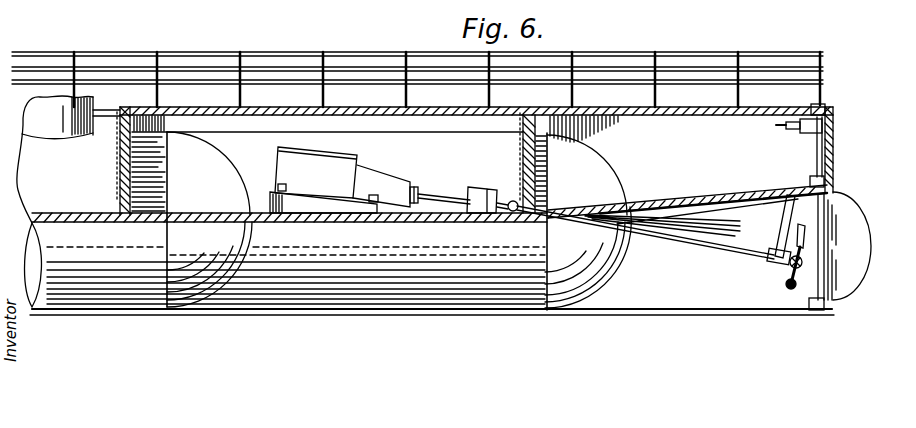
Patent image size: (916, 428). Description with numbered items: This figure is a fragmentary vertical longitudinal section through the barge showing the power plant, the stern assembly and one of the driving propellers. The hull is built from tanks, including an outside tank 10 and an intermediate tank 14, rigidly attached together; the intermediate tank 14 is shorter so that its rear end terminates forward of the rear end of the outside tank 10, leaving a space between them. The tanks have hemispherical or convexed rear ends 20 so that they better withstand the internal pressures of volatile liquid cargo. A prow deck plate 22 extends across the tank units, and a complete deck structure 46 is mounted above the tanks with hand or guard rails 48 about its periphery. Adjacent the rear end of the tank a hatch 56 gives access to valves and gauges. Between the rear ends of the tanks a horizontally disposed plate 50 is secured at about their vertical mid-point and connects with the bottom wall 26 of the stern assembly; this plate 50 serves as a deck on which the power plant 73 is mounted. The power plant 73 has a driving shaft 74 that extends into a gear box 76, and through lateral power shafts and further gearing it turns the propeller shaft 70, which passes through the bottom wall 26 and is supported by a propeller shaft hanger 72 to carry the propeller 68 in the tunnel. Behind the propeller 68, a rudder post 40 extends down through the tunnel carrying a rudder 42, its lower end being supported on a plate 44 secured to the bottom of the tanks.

The outside tank 10 is at (493, 296).
The intermediate tank 14 is at (125, 290).
The rear ends 20 is at (213, 173).
The deck plate 22 is at (687, 116).
The bottom wall 26 is at (692, 197).
The rudder post 40 is at (820, 152).
The rudder 42 is at (847, 252).
The plate 44 is at (783, 313).
The deck structure 46 is at (257, 110).
The hand or guard rails 48 is at (212, 57).
The horizontally disposed plate 50 is at (430, 222).
The hatch 56 is at (55, 159).
The propeller 68 is at (783, 282).
The propeller shaft 70 is at (720, 252).
The propeller shaft hanger 72 is at (787, 223).
The power plant 73 is at (358, 168).
The driving shaft 74 is at (440, 193).
The gear box 76 is at (480, 196).